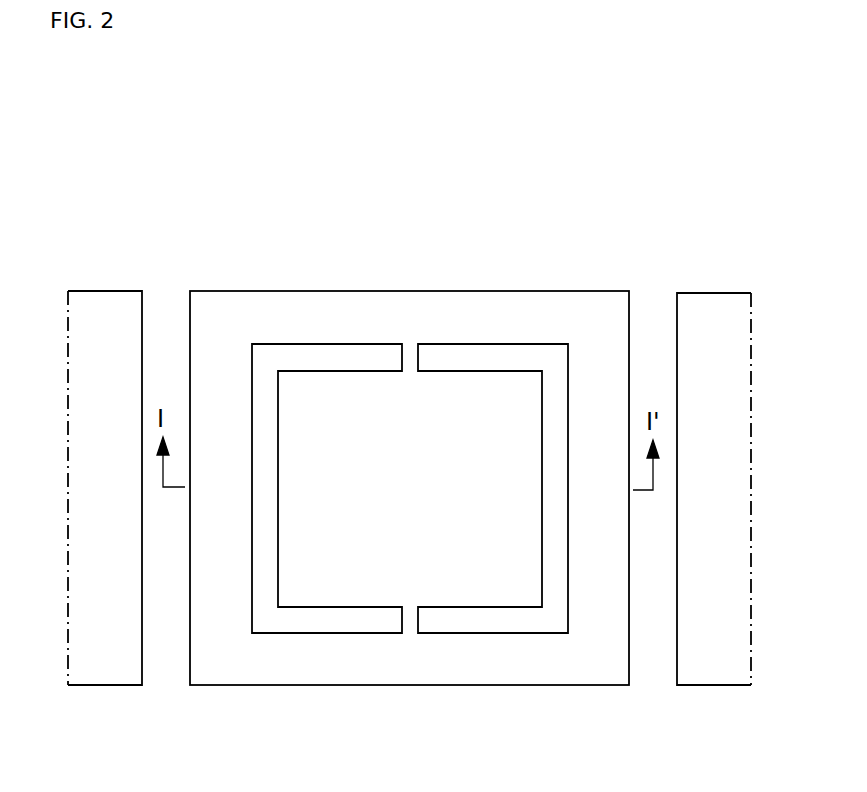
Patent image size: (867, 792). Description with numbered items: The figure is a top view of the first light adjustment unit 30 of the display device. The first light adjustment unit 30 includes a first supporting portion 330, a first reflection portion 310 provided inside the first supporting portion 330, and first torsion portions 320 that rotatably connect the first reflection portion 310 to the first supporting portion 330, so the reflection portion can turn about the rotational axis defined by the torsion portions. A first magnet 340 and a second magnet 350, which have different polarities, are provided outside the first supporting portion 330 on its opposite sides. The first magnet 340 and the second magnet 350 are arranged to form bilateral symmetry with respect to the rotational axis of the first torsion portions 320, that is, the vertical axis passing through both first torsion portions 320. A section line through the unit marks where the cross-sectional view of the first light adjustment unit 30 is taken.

The first light adjustment unit 30 is at (455, 160).
The first reflection portion 310 is at (337, 588).
The first torsion portions 320 is at (408, 622).
The first supporting portion 330 is at (584, 487).
The first magnet 340 is at (105, 305).
The second magnet 350 is at (715, 307).